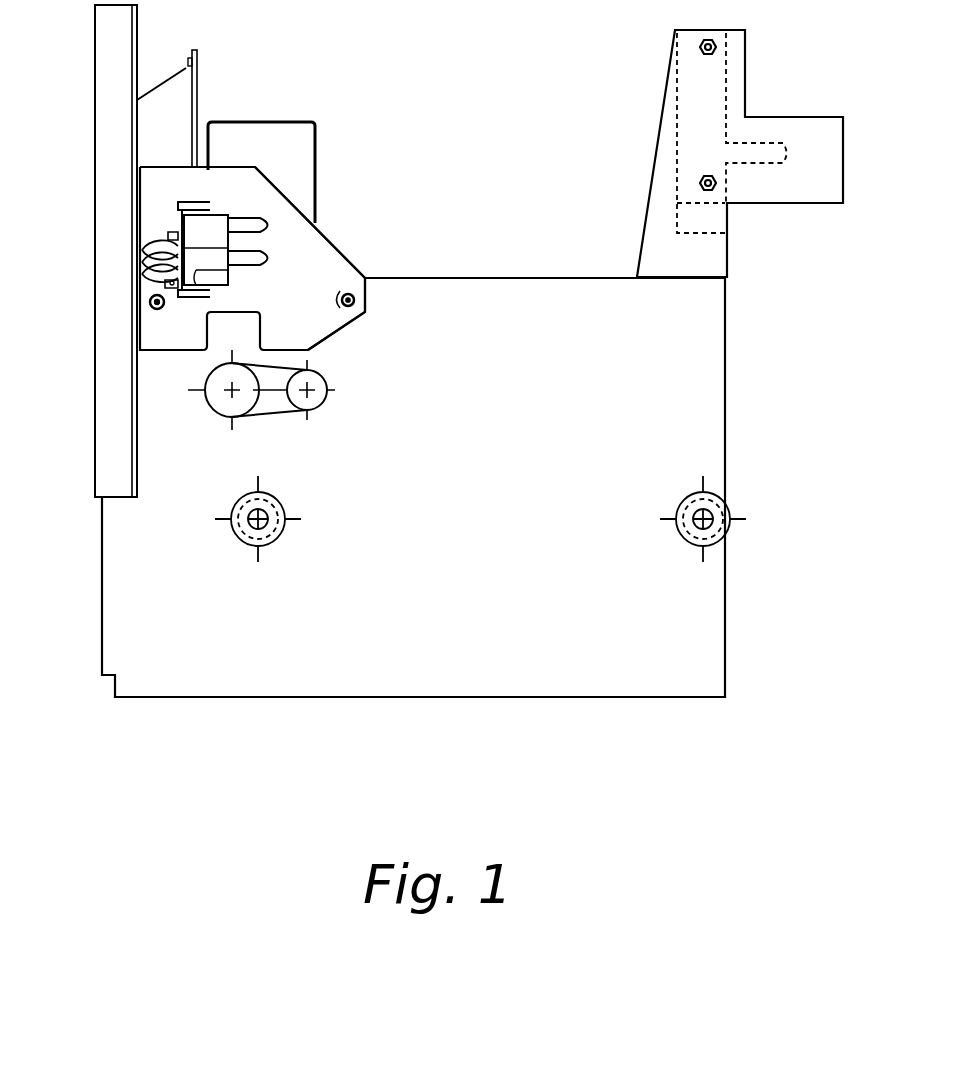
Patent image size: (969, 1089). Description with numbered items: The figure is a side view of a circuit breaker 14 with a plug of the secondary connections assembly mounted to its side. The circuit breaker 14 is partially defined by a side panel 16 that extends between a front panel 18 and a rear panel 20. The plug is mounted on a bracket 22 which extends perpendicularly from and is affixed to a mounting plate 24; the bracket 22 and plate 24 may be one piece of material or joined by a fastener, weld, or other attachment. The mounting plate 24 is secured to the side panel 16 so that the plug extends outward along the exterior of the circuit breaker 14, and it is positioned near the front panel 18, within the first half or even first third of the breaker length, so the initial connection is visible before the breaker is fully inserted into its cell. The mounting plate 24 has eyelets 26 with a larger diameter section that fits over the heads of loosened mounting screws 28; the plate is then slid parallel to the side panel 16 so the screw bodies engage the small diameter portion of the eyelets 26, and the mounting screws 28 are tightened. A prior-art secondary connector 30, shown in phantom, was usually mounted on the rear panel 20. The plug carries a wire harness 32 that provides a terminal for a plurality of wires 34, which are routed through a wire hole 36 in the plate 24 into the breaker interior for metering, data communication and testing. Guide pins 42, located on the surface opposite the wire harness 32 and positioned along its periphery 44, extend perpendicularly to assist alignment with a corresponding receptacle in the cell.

The circuit breaker 14 is at (530, 293).
The side panel 16 is at (616, 293).
The front panel 18 is at (107, 471).
The rear panel 20 is at (700, 375).
The bracket 22 is at (197, 200).
The mounting plate 24 is at (343, 250).
The eyelets 26 is at (148, 303).
The mounting screws 28 is at (157, 318).
The secondary connector 30 is at (766, 150).
The wire harness 32 is at (166, 236).
The wires 34 is at (145, 258).
The wire hole 36 is at (145, 283).
The guide pins 42 is at (255, 220).
The periphery 44 is at (247, 285).